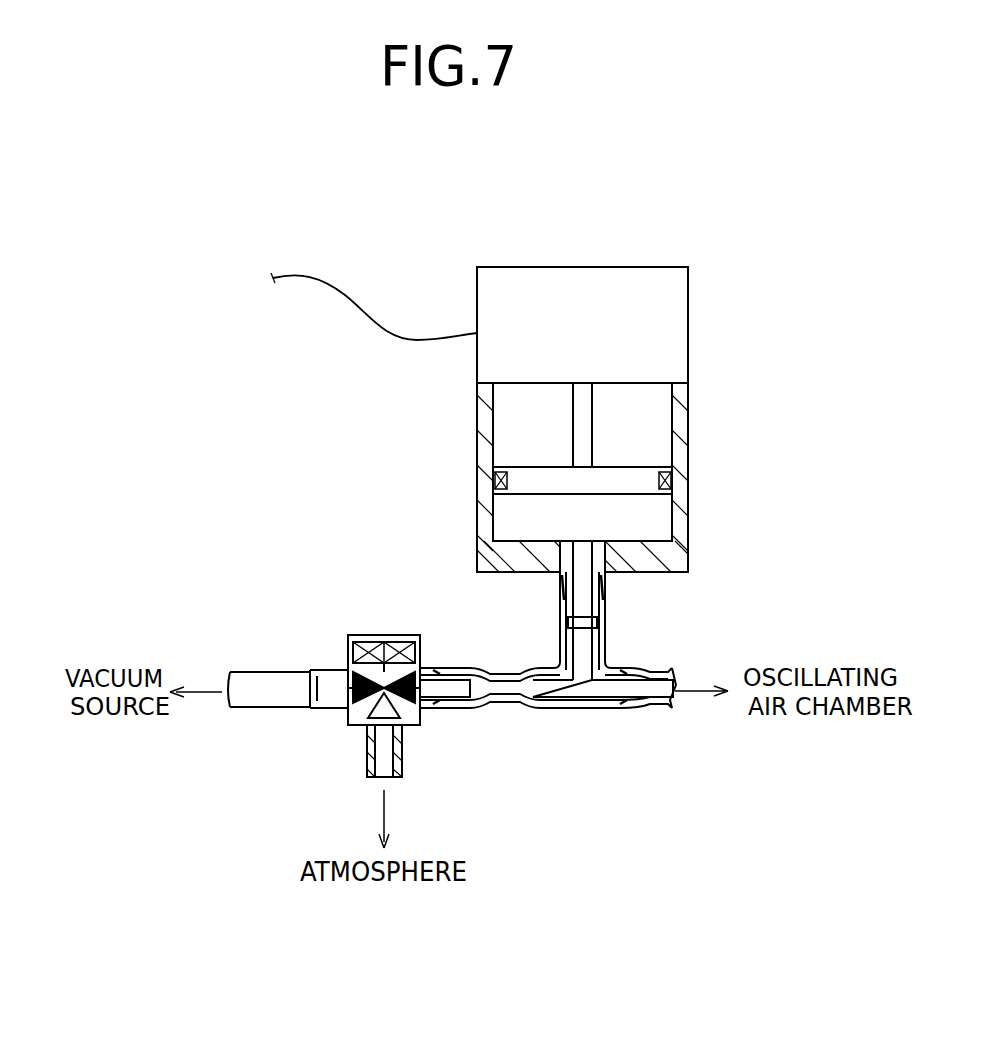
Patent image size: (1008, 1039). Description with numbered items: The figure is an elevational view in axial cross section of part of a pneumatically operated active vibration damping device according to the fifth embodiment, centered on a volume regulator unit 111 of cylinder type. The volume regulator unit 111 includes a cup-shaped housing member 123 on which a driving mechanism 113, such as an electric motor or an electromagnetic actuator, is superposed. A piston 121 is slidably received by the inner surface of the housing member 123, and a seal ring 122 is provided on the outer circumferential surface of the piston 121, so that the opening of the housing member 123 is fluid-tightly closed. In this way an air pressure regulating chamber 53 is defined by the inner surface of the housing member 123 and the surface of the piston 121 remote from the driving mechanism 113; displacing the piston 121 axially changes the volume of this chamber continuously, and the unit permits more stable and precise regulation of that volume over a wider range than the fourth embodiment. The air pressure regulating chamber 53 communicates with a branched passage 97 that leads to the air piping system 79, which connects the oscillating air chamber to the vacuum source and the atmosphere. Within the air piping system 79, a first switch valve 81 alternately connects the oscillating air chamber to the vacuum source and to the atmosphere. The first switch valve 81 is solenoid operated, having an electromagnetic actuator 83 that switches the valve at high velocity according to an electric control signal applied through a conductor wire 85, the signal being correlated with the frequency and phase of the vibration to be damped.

The volume regulator unit 111 is at (717, 357).
The driving mechanism 113 is at (510, 283).
The piston 121 is at (530, 480).
The seal ring 122 is at (674, 478).
The housing member 123 is at (688, 420).
The air pressure regulating chamber 53 is at (510, 523).
The branched passage 97 is at (557, 650).
The air piping system 79 is at (492, 712).
The conductor wire 85 is at (320, 658).
The electromagnetic actuator 83 is at (375, 647).
The first switch valve 81 is at (358, 720).